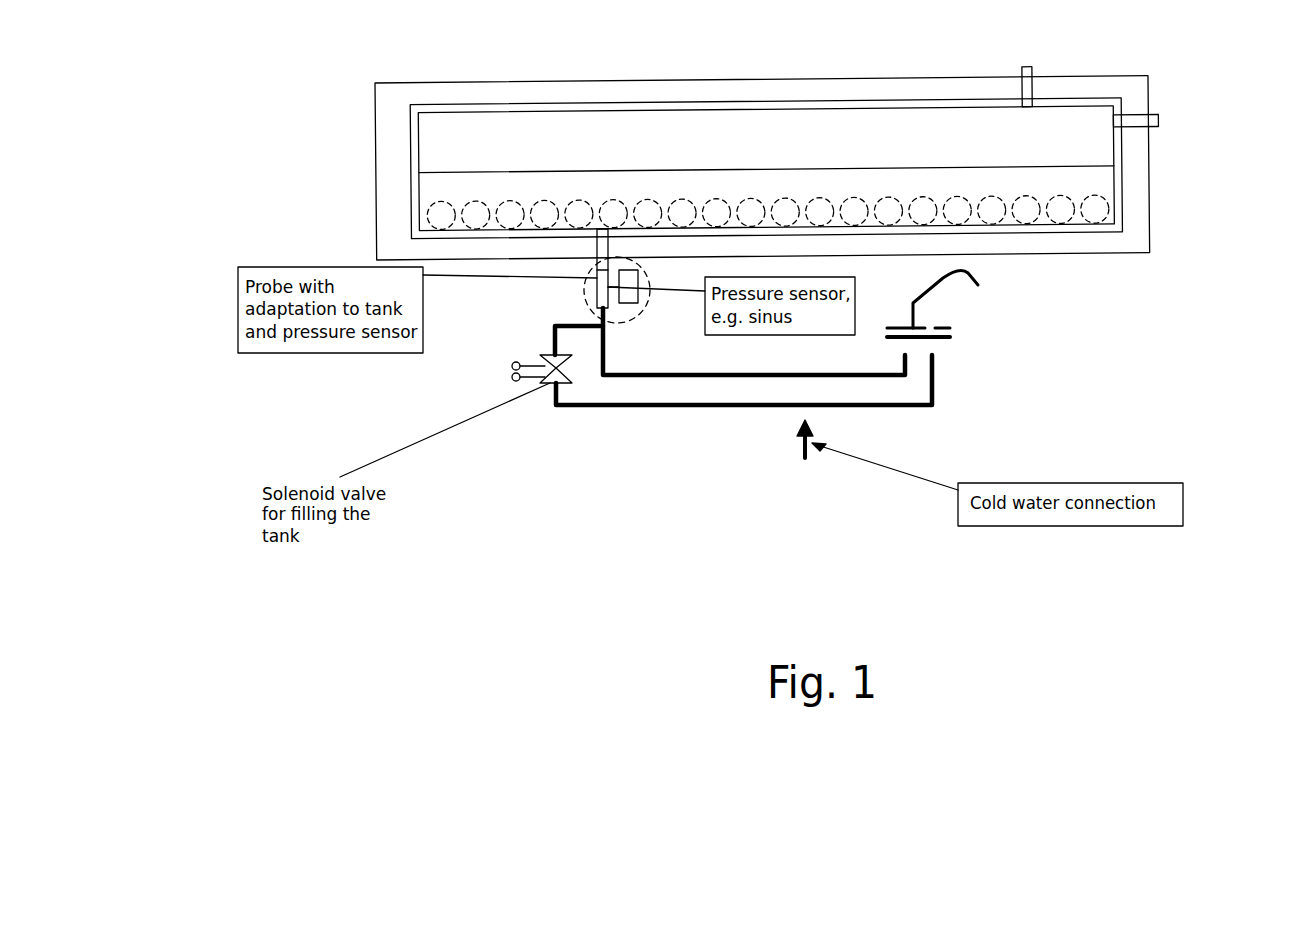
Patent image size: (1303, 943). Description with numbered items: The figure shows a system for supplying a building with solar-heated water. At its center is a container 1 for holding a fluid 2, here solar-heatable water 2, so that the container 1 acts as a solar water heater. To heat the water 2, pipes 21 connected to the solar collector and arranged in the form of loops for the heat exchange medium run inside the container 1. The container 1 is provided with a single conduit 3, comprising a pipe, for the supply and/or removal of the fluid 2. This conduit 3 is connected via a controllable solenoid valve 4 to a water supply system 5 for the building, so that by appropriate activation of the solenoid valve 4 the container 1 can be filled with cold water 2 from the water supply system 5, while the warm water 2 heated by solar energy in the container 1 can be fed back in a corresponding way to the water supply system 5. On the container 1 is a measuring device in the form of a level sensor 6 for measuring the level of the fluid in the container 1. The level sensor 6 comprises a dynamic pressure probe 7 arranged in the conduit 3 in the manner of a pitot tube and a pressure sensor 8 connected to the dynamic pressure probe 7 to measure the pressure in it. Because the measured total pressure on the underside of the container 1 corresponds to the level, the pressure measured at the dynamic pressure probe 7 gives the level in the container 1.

The container 1 is at (812, 140).
The fluid 2 is at (785, 151).
The pipes 21 is at (768, 212).
The conduit 3 is at (603, 250).
The level sensor 6 is at (526, 332).
The pressure sensor 8 is at (638, 303).
The dynamic pressure probe 7 is at (601, 300).
The solenoid valve 4 is at (552, 387).
The water supply system 5 is at (727, 408).